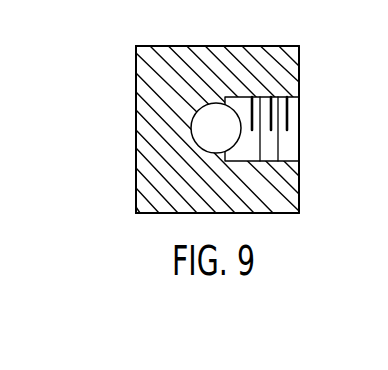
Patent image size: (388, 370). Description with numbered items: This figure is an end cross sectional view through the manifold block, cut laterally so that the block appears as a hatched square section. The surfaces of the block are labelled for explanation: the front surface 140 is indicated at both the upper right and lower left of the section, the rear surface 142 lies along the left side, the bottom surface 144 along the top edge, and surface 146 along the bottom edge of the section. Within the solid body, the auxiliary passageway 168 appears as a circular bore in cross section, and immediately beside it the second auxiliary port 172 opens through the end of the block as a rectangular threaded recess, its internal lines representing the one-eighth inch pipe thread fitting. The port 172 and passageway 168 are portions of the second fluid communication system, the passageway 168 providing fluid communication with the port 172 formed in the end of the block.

The front surface 140 is at (214, 130).
The rear surface 142 is at (136, 139).
The bottom surface 144 is at (248, 46).
The bottom side of block 146 is at (277, 215).
The auxiliary passageway 168 is at (229, 138).
The second auxiliary port 172 is at (271, 129).